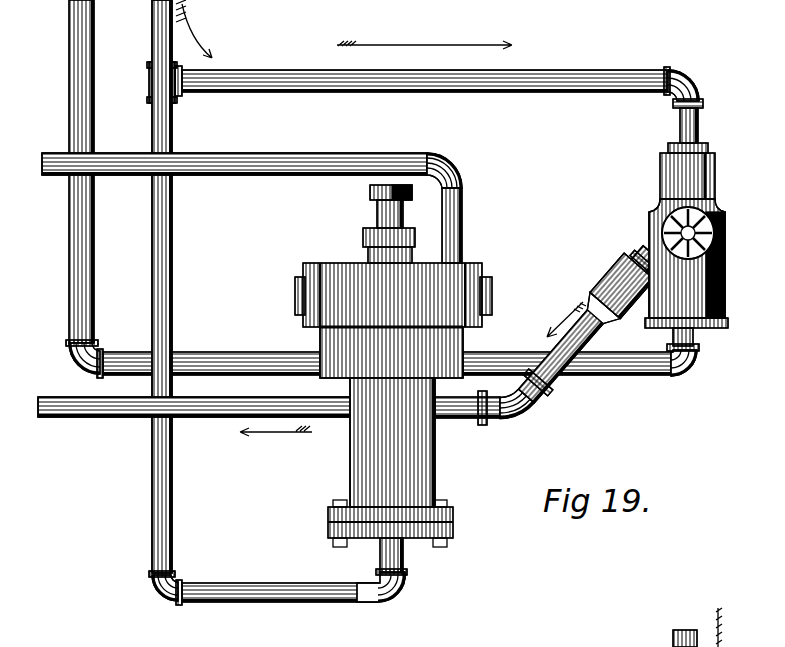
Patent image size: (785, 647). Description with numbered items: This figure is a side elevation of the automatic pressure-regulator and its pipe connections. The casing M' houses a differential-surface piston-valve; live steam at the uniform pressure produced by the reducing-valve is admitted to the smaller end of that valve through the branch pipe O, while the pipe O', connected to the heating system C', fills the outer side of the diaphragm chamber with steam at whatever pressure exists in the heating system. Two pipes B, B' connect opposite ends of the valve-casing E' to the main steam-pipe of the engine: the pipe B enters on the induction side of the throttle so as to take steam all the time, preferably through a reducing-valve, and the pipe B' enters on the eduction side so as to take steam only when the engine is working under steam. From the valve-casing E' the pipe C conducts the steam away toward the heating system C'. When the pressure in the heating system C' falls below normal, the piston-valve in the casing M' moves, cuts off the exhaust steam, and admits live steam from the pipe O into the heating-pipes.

The live-steam pipe B is at (384, 189).
The live-steam pipe B' is at (581, 364).
The pipe C is at (550, 332).
The heating system C' is at (195, 286).
The branch pipe O is at (278, 580).
The pipe O' is at (252, 195).
The casing M' is at (393, 379).
The valve-casing E' is at (699, 218).